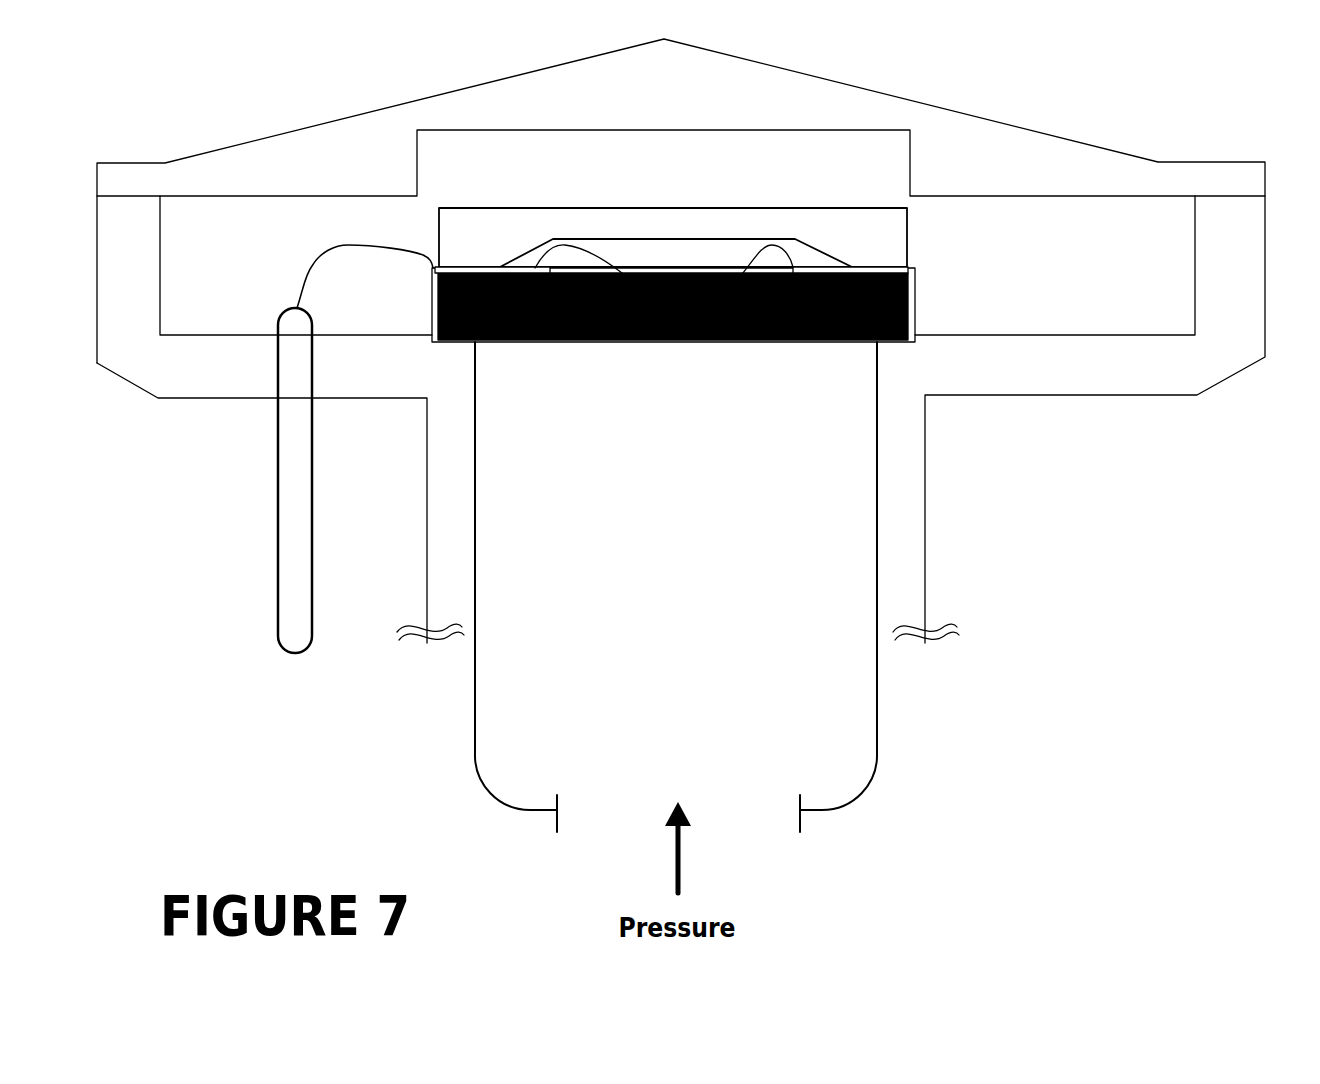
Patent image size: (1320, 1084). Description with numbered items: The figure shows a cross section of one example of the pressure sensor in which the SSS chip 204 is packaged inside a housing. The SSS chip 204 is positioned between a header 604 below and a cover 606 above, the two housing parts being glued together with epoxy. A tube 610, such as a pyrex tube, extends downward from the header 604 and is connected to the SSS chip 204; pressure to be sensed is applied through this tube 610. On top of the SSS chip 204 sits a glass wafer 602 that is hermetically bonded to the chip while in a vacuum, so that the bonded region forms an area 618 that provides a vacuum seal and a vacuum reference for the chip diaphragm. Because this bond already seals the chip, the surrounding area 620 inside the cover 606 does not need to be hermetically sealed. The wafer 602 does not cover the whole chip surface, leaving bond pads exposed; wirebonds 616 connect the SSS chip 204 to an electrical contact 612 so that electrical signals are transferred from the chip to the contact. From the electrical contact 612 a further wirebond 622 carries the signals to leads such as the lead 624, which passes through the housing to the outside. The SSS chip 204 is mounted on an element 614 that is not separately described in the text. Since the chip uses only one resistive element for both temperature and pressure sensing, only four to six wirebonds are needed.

The cover 606 is at (987, 117).
The area 620 is at (1107, 218).
The header 604 is at (925, 538).
The tube 610 is at (877, 477).
The electrical contact 612 is at (915, 307).
The frame 614 is at (918, 258).
The glass wafer 602 is at (907, 228).
The SSS chip 204 is at (686, 258).
The wirebonds 616 is at (616, 246).
The area 618 is at (729, 243).
The wirebond 622 is at (300, 262).
The lead 624 is at (280, 548).